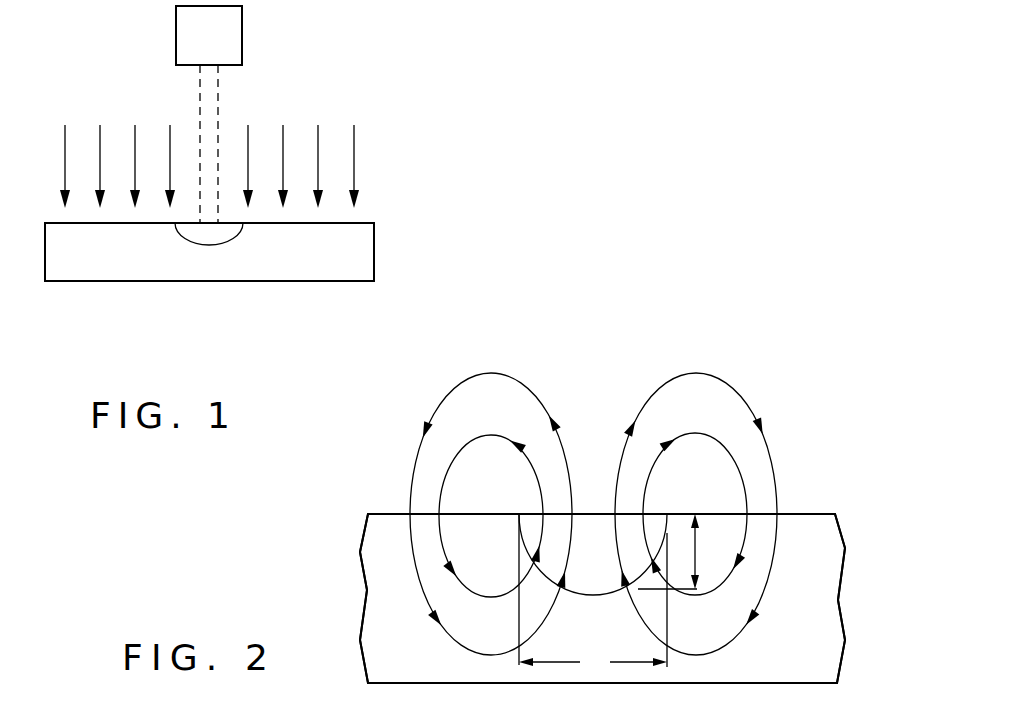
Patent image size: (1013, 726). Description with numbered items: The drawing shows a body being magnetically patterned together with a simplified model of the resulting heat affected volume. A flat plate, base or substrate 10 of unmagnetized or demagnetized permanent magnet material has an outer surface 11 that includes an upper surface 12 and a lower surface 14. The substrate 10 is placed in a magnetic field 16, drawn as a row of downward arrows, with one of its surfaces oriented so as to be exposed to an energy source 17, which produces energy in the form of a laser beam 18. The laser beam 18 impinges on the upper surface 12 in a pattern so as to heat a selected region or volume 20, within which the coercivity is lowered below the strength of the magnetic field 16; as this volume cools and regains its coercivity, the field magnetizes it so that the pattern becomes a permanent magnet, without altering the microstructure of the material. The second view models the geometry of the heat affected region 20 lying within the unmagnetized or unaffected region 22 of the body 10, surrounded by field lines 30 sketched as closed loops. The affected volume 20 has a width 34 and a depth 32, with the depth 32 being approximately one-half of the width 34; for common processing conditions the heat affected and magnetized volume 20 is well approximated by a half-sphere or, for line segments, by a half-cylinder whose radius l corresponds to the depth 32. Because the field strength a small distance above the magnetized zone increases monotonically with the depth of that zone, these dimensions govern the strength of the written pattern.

In FIG. 1, the substrate 10 is at (390, 253).
In FIG. 2, the substrate 10 is at (336, 582).
In FIG. 1, the outer surface 11 is at (270, 268).
In FIG. 1, the upper surface 12 is at (366, 222).
In FIG. 1, the lower surface 14 is at (345, 281).
In FIG. 1, the magnetic field 16 is at (318, 137).
In FIG. 1, the energy source 17 is at (227, 47).
In FIG. 1, the laser beam 18 is at (218, 90).
In FIG. 1, the heat affected volume 20 is at (202, 245).
In FIG. 1, the unaffected region 22 is at (105, 262).
In FIG. 2, the unaffected region 22 is at (390, 530).
In FIG. 2, the convection flow loops 30 is at (650, 393).
In FIG. 2, the depth 32 is at (698, 552).
In FIG. 2, the width 34 is at (593, 593).